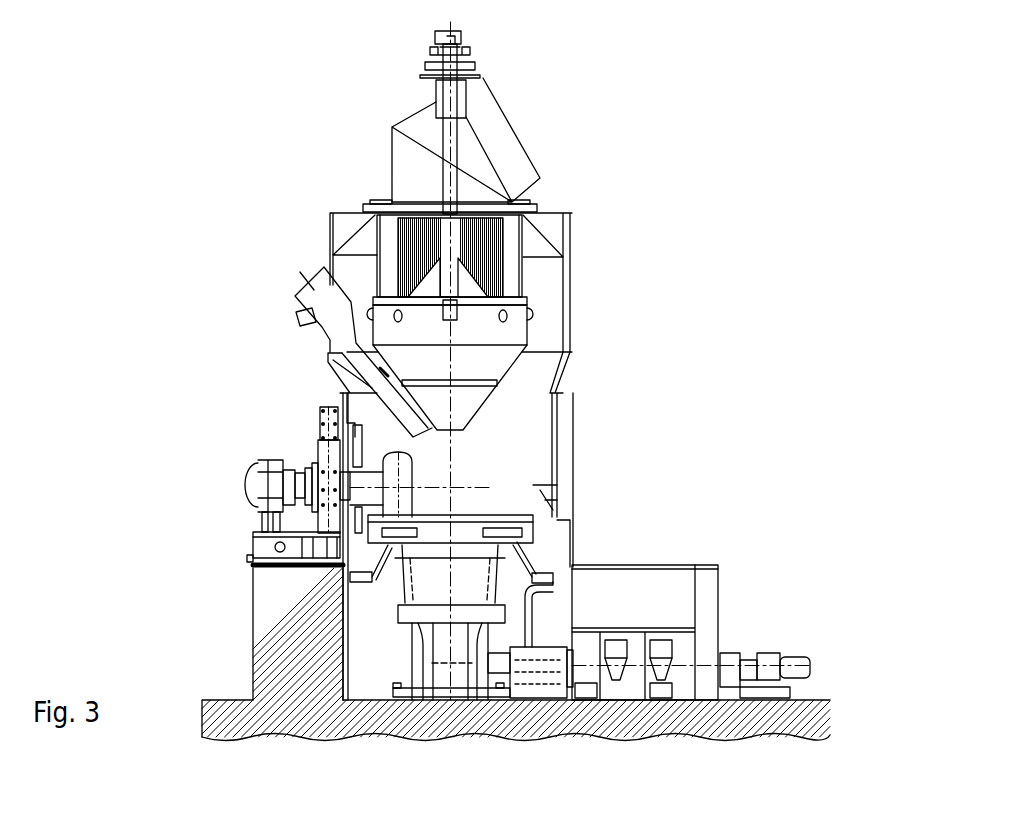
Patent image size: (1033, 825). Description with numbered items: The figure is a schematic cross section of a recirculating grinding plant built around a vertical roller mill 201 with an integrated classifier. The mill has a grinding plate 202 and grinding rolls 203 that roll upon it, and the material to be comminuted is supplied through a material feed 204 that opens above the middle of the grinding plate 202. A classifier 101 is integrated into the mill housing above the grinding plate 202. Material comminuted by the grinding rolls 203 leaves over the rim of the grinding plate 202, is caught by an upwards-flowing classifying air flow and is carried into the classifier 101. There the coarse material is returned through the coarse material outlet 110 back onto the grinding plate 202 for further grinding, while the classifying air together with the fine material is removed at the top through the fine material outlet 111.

The classifier 101 is at (542, 278).
The coarse material outlet 110 is at (463, 428).
The fine material outlet 111 is at (498, 107).
The vertical roller mill 201 is at (510, 480).
The grinding plate 202 is at (525, 522).
The grinding rolls 203 is at (405, 465).
The material feed 204 is at (330, 310).